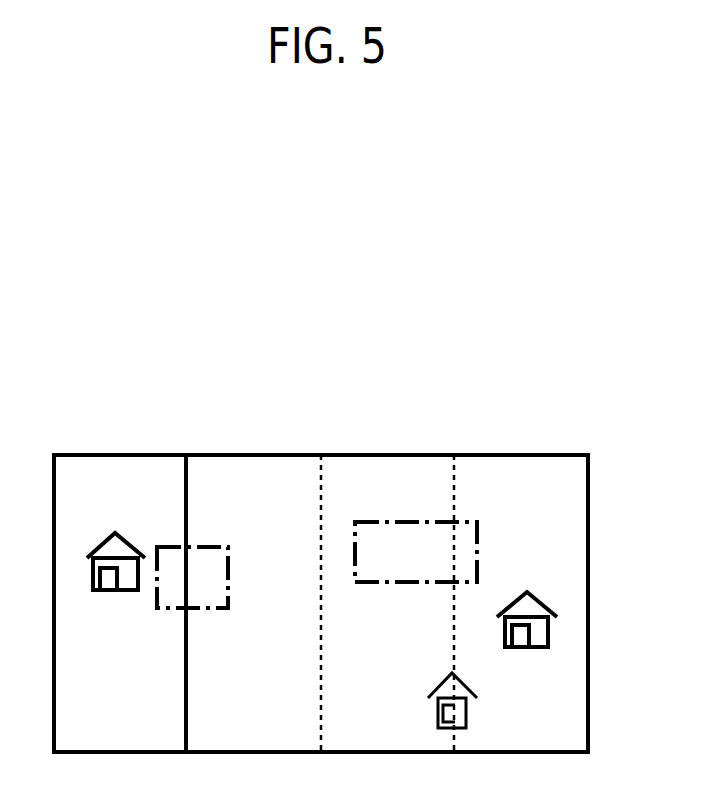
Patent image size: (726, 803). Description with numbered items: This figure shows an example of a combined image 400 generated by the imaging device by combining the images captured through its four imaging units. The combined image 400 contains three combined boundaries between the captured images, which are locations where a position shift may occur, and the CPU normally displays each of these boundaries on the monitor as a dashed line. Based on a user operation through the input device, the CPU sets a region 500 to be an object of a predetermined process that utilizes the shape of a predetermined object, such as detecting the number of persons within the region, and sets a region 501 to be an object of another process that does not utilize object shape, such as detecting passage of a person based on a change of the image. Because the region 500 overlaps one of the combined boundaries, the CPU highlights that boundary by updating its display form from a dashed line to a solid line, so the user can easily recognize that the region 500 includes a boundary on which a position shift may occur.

The combined image 400 is at (137, 454).
The region 500 is at (207, 546).
The region 501 is at (437, 521).